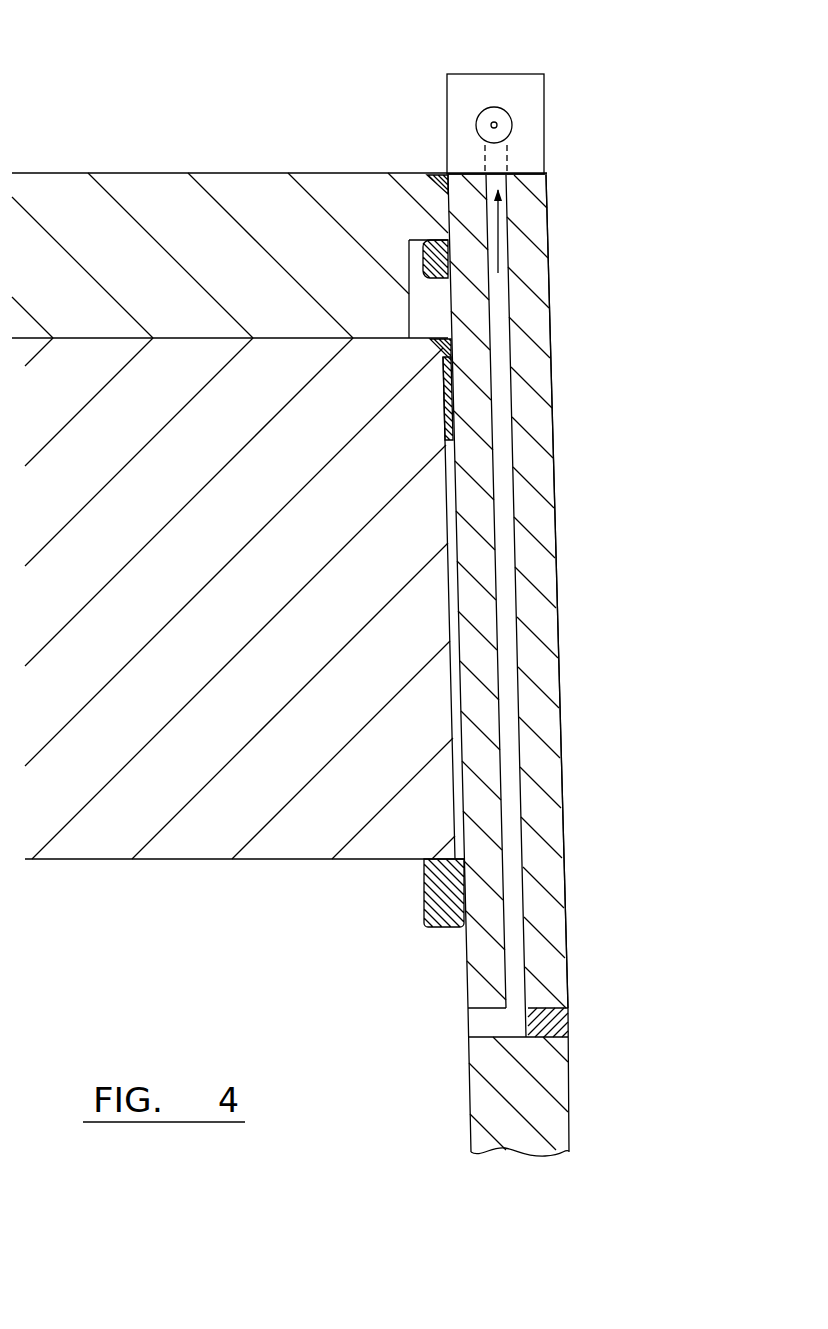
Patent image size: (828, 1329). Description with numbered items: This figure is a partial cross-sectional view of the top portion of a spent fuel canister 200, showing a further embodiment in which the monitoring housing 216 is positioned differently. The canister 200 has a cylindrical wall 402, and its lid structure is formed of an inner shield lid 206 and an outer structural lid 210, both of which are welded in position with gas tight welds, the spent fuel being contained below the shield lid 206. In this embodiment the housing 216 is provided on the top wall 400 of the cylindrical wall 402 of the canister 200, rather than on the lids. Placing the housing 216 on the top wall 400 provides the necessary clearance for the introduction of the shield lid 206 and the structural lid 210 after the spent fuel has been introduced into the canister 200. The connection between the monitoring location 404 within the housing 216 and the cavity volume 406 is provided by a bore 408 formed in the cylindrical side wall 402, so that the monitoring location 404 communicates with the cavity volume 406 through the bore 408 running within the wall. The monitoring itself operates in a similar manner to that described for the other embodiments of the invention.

The canister 200 is at (566, 627).
The shield lid 206 is at (199, 455).
The structural lid 210 is at (275, 217).
The housing 216 is at (547, 80).
The top wall 400 is at (549, 172).
The cylindrical wall 402 is at (539, 534).
The monitoring location 404 is at (512, 123).
The cavity volume 406 is at (270, 956).
The bore 408 is at (510, 747).